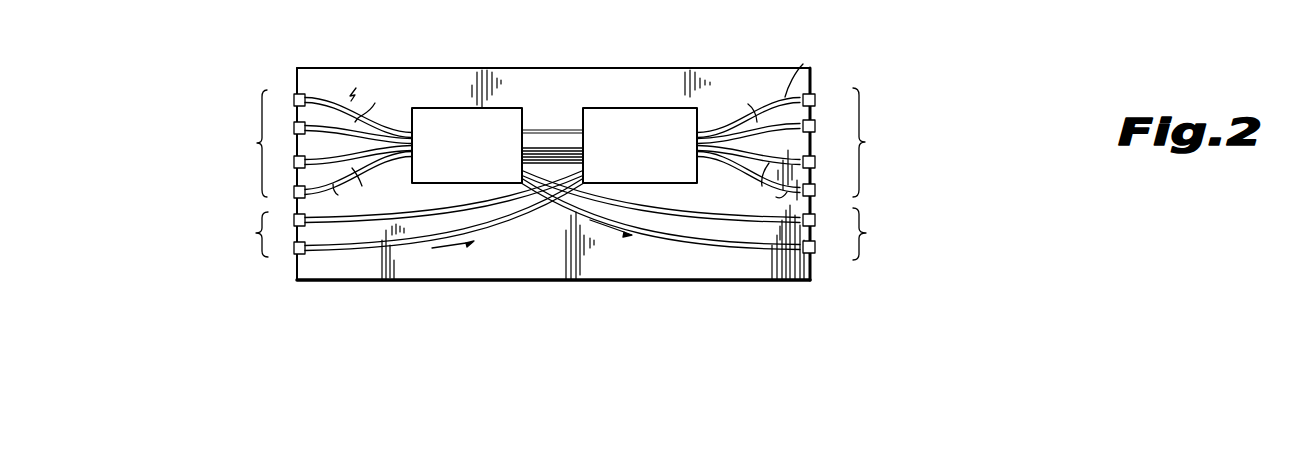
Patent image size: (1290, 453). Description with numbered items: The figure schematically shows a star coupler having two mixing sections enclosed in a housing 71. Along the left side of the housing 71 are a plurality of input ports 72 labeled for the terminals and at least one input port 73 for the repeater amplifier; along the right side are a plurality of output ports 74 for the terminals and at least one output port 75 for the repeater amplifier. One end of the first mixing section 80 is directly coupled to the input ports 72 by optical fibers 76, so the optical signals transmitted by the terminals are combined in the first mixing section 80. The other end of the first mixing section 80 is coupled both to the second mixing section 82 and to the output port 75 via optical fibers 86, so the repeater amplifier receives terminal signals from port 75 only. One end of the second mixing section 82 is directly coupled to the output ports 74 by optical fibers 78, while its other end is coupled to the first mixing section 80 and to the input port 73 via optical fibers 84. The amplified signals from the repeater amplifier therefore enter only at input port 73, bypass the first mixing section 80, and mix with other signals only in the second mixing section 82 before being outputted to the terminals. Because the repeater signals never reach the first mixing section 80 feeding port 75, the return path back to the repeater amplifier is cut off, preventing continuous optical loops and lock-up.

The housing 71 is at (412, 283).
The input ports 72 is at (257, 143).
The input port 73 is at (255, 233).
The output ports 74 is at (866, 142).
The output port 75 is at (866, 233).
The optical fibers 76 is at (333, 88).
The optical fibers 78 is at (768, 90).
The first mixing section 80 is at (426, 186).
The second mixing section 82 is at (695, 189).
The optical fibers 84 is at (501, 224).
The optical fibers 86 is at (647, 228).